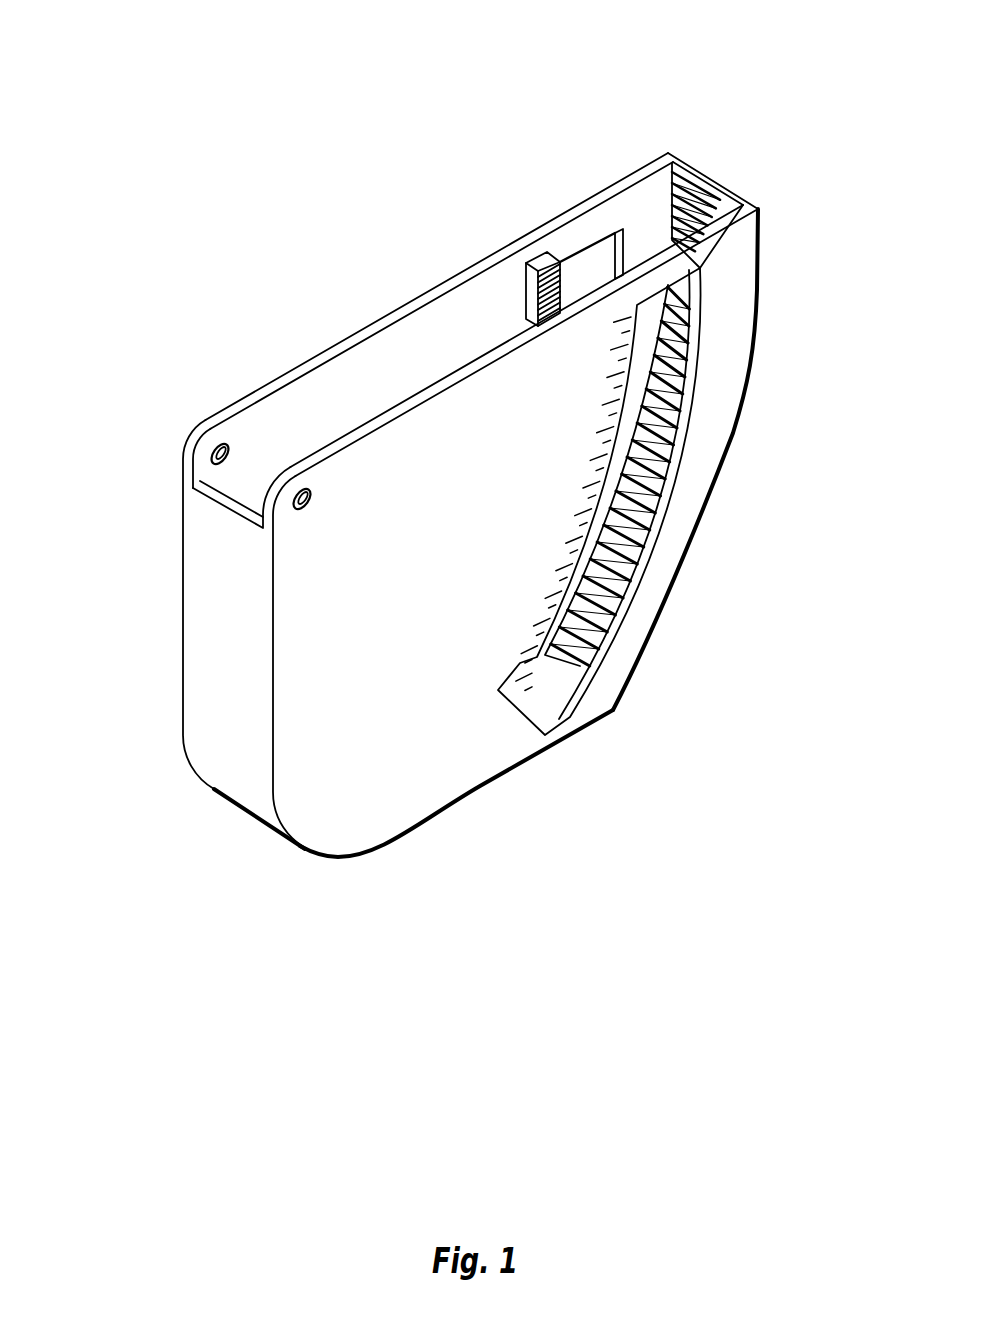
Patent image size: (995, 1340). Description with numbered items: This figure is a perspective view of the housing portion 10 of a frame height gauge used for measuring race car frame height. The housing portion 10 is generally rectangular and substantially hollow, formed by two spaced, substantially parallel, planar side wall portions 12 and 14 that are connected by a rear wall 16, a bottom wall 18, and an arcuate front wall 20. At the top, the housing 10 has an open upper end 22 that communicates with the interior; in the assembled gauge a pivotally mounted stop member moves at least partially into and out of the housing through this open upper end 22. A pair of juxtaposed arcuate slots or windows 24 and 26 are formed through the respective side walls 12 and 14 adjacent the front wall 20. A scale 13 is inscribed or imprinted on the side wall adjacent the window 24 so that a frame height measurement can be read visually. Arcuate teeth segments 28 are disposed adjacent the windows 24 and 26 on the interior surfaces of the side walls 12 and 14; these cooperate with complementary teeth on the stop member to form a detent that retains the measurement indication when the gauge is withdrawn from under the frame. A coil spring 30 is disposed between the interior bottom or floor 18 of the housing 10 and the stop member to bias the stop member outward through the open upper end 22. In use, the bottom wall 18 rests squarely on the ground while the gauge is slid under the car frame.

The housing portion 10 is at (352, 100).
The side wall portion 12 is at (360, 724).
The scale 13 is at (600, 448).
The side wall portion 14 is at (183, 552).
The rear wall 16 is at (227, 657).
The bottom wall 18 is at (470, 798).
The arcuate front wall 20 is at (733, 437).
The open upper end 22 is at (356, 375).
The arcuate slot or window 24 is at (642, 348).
The arcuate slot or window 26 is at (583, 263).
The arcuate teeth segments 28 is at (541, 260).
The coil spring 30 is at (640, 533).